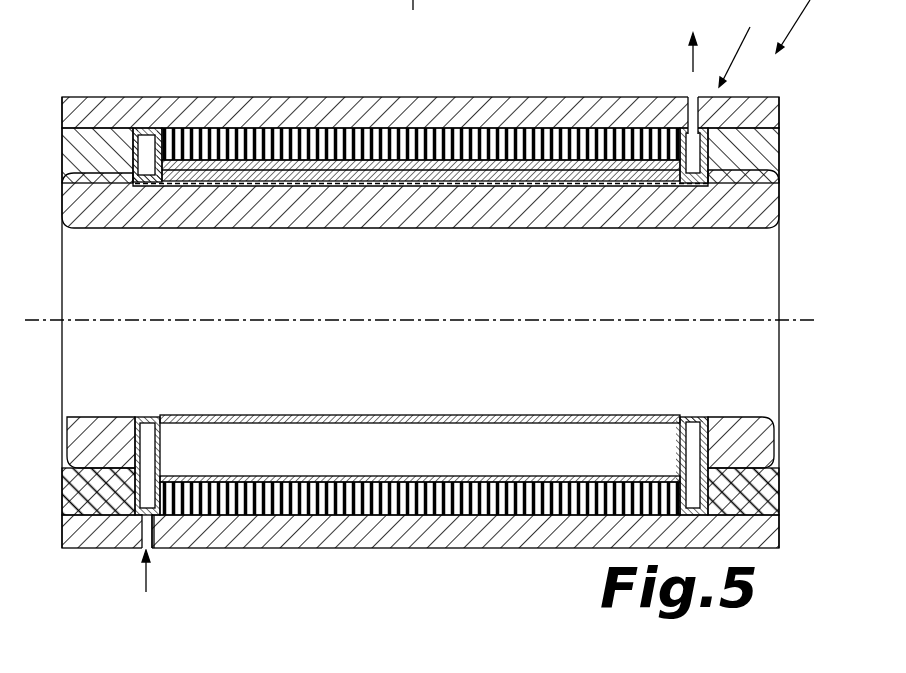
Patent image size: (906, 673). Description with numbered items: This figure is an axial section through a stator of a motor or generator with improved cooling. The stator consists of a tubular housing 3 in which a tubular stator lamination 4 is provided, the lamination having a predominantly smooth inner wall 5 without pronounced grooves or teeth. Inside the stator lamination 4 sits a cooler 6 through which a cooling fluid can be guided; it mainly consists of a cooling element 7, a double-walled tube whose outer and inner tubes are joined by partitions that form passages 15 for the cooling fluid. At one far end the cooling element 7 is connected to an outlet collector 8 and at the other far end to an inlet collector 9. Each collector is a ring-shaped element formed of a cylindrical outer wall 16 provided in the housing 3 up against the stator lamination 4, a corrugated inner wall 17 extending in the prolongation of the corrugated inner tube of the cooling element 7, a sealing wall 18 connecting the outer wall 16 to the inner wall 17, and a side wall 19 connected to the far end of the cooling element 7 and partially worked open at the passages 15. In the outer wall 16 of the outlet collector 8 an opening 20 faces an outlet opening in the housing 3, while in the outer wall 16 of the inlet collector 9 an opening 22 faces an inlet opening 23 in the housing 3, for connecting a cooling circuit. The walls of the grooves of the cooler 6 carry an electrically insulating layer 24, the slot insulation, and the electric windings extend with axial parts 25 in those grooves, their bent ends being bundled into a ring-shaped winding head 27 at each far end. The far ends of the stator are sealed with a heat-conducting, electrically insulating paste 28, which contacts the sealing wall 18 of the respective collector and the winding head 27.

The tubular housing 3 is at (275, 548).
The tubular stator lamination 4 is at (233, 135).
The inner wall 5 is at (500, 158).
The cooler 6 is at (739, 44).
The cooling element 7 is at (433, 484).
The outlet collector 8 is at (708, 147).
The inlet collector 9 is at (130, 462).
The passages 15 is at (512, 457).
The cylindrical outer wall 16 is at (150, 128).
The corrugated inner wall 17 is at (150, 180).
The sealing wall 18 is at (133, 152).
The side wall 19 is at (160, 157).
The opening 20 is at (678, 126).
The opening 22 is at (142, 515).
The inlet opening 23 is at (152, 535).
The electrically insulating film or layer 24 is at (400, 165).
The axial parts 25 is at (340, 165).
The ring-shaped winding head 27 is at (64, 204).
The heat-conducting and electrically insulating paste 28 is at (80, 138).